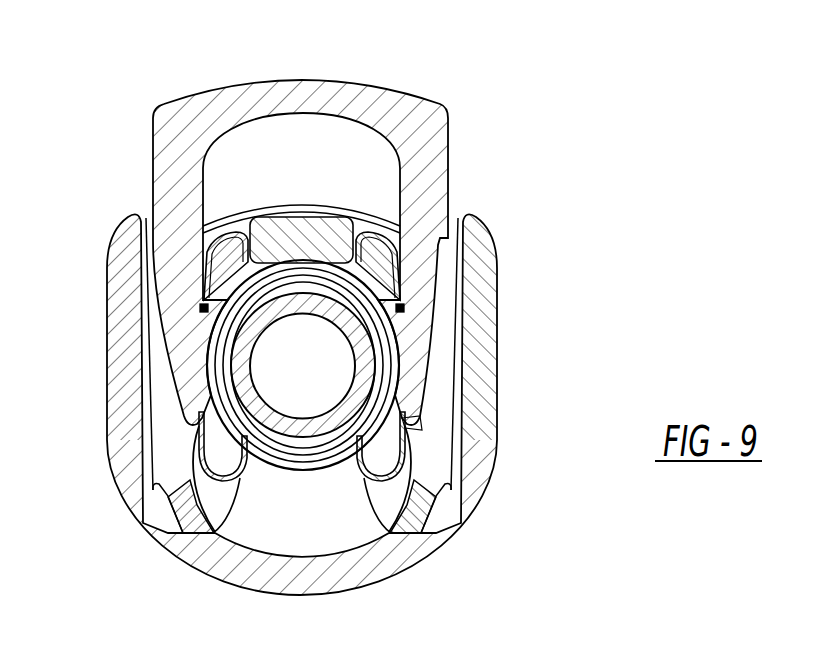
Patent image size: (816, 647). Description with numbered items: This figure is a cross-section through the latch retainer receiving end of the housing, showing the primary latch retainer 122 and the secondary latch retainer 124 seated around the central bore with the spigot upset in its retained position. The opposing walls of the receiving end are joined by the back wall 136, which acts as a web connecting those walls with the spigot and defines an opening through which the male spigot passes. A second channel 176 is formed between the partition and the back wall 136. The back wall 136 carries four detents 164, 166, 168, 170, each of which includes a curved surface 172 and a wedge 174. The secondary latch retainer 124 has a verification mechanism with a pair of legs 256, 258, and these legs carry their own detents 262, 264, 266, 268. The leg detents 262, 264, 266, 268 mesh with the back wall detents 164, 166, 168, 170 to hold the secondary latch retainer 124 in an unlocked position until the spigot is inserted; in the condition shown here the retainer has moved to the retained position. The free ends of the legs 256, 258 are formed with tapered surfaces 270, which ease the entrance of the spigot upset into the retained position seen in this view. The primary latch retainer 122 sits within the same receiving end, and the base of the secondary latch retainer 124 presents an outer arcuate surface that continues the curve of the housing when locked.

The primary latch retainer 122 is at (288, 596).
The secondary latch retainer 124 is at (283, 77).
The back wall 136 is at (434, 438).
The detent 164 is at (222, 455).
The detent 166 is at (383, 452).
The detent 168 is at (230, 262).
The detent 170 is at (408, 285).
The curved surface 172 is at (380, 267).
The wedge 174 is at (400, 293).
The second channel 176 is at (442, 326).
The leg 256 is at (417, 268).
The leg 258 is at (185, 265).
The detent 262 is at (405, 309).
The detent 264 is at (205, 308).
The detent 266 is at (196, 413).
The detent 268 is at (400, 436).
The tapered surface 270 is at (220, 418).